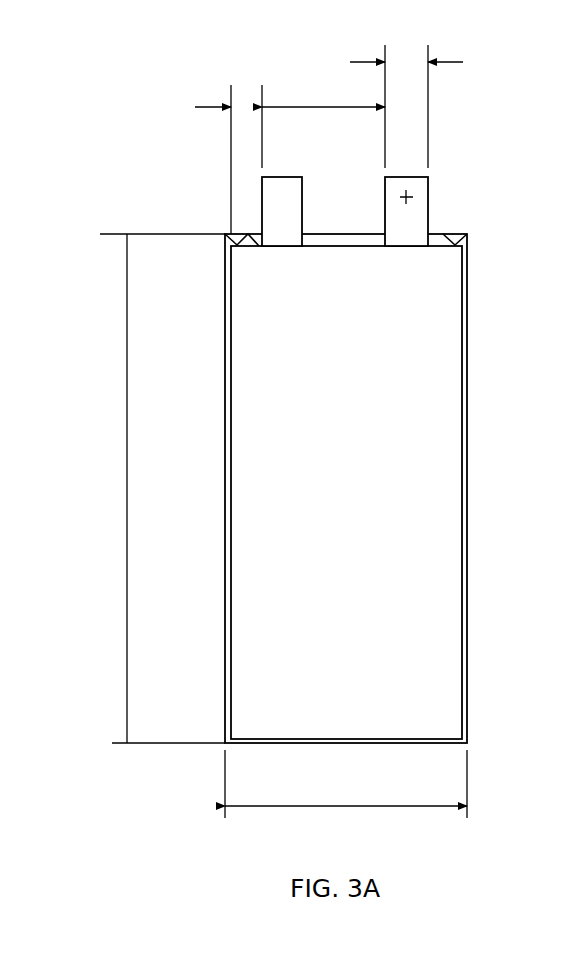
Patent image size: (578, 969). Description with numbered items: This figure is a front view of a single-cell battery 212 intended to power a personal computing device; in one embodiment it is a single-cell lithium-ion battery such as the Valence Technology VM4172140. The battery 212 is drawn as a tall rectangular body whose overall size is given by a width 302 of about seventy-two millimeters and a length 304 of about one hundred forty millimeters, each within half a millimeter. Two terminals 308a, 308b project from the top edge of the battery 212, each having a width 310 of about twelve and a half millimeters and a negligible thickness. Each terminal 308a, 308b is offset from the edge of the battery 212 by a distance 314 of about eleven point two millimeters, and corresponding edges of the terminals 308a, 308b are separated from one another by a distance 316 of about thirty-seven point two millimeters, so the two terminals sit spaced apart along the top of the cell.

The single-cell battery 212 is at (363, 472).
The width 302 is at (348, 806).
The length 304 is at (127, 453).
The terminal 308a is at (279, 177).
The terminal 308b is at (428, 200).
The width 310 is at (453, 62).
The distance 314 is at (207, 107).
The distance 316 is at (352, 105).